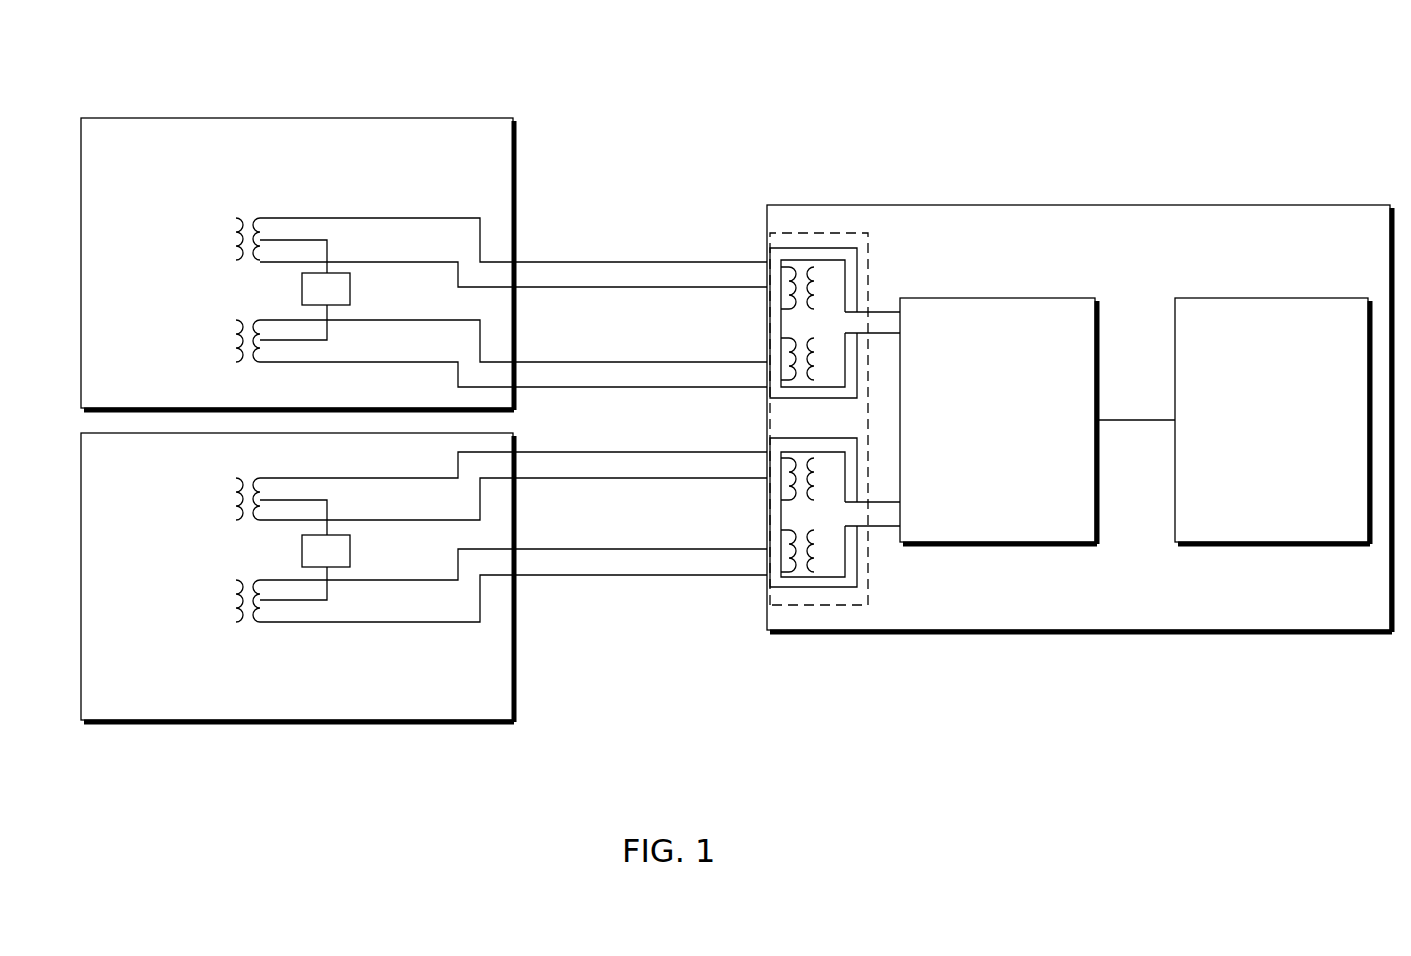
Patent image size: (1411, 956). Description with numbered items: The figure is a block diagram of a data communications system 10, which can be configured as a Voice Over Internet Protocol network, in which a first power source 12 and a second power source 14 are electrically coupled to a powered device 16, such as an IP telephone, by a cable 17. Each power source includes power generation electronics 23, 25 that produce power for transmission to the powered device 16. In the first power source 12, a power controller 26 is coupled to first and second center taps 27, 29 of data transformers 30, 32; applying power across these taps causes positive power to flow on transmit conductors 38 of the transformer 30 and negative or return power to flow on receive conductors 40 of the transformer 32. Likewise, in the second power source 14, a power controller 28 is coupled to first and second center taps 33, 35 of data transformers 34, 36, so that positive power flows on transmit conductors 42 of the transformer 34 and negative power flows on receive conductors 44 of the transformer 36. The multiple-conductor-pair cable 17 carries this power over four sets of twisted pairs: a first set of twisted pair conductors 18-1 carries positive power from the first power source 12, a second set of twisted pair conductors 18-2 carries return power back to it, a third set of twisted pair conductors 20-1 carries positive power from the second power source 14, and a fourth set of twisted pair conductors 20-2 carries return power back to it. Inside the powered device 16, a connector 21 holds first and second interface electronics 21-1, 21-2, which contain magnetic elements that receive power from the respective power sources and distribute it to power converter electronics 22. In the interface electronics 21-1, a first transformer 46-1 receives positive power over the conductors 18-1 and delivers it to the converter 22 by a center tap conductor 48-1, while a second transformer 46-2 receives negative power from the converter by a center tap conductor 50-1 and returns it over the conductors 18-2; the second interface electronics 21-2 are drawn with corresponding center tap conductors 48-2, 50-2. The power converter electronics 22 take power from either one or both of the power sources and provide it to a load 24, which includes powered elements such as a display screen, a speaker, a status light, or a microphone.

The data communications system 10 is at (1212, 85).
The first power source 12 is at (243, 187).
The second power source 14 is at (253, 713).
The powered device 16 is at (1373, 613).
The cable 17 is at (652, 168).
The first set of twisted pair conductors 18-1 is at (583, 261).
The second set of twisted pair conductors 18-2 is at (583, 361).
The third set of twisted pair conductors 20-1 is at (577, 481).
The fourth set of twisted pair conductors 20-2 is at (577, 578).
The connector 21 is at (777, 607).
The first interface electronics 21-1 is at (833, 248).
The second interface electronics 21-2 is at (820, 580).
The power converter electronics 22 is at (984, 449).
The power generation electronics 23 is at (415, 103).
The load 24 is at (1261, 449).
The power generation electronics 25 is at (415, 742).
The power controller 26 is at (313, 300).
The first center tap 27 is at (283, 241).
The power controller 28 is at (313, 562).
The second center tap 29 is at (287, 339).
The data transformer 30 is at (208, 245).
The data transformer 32 is at (212, 330).
The first center tap 33 is at (295, 498).
The data transformer 34 is at (213, 502).
The second center tap 35 is at (298, 599).
The data transformer 36 is at (213, 598).
The transmit conductors 38 is at (427, 208).
The receive conductors 40 is at (410, 373).
The transmit conductors 42 is at (403, 468).
The receive conductors 44 is at (427, 637).
The first transformer 46-1 is at (803, 253).
The second transformer 46-2 is at (803, 583).
The center tap conductor 48-1 is at (877, 312).
The center tap conductor 48-2 is at (875, 503).
The center tap conductor 50-1 is at (890, 330).
The center tap conductor 50-2 is at (875, 527).